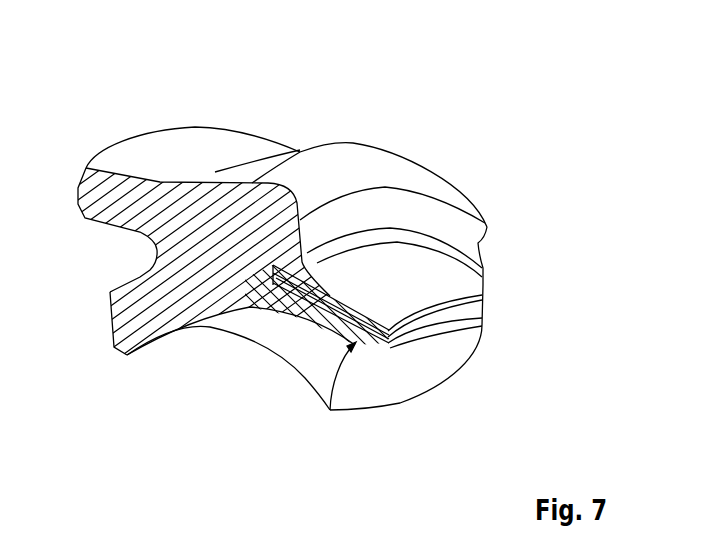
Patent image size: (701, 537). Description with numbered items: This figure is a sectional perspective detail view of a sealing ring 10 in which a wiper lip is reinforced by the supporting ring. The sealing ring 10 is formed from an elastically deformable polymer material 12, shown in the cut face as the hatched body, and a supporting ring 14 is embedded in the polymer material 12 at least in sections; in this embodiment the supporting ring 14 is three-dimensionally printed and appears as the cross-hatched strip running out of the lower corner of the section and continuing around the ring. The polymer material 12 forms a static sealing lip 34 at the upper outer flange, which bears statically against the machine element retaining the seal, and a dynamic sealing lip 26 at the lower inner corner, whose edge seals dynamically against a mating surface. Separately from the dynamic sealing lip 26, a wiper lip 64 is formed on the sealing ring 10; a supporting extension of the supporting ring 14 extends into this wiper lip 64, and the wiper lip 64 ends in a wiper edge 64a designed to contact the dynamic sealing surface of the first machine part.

The sealing ring 10 is at (490, 108).
The polymer material 12 is at (207, 217).
The supporting ring 14 is at (346, 296).
The dynamic sealing lip 26 is at (127, 355).
The static sealing lip 34 is at (86, 168).
The wiper lip 64 is at (330, 410).
The wiper edge 64a is at (390, 338).